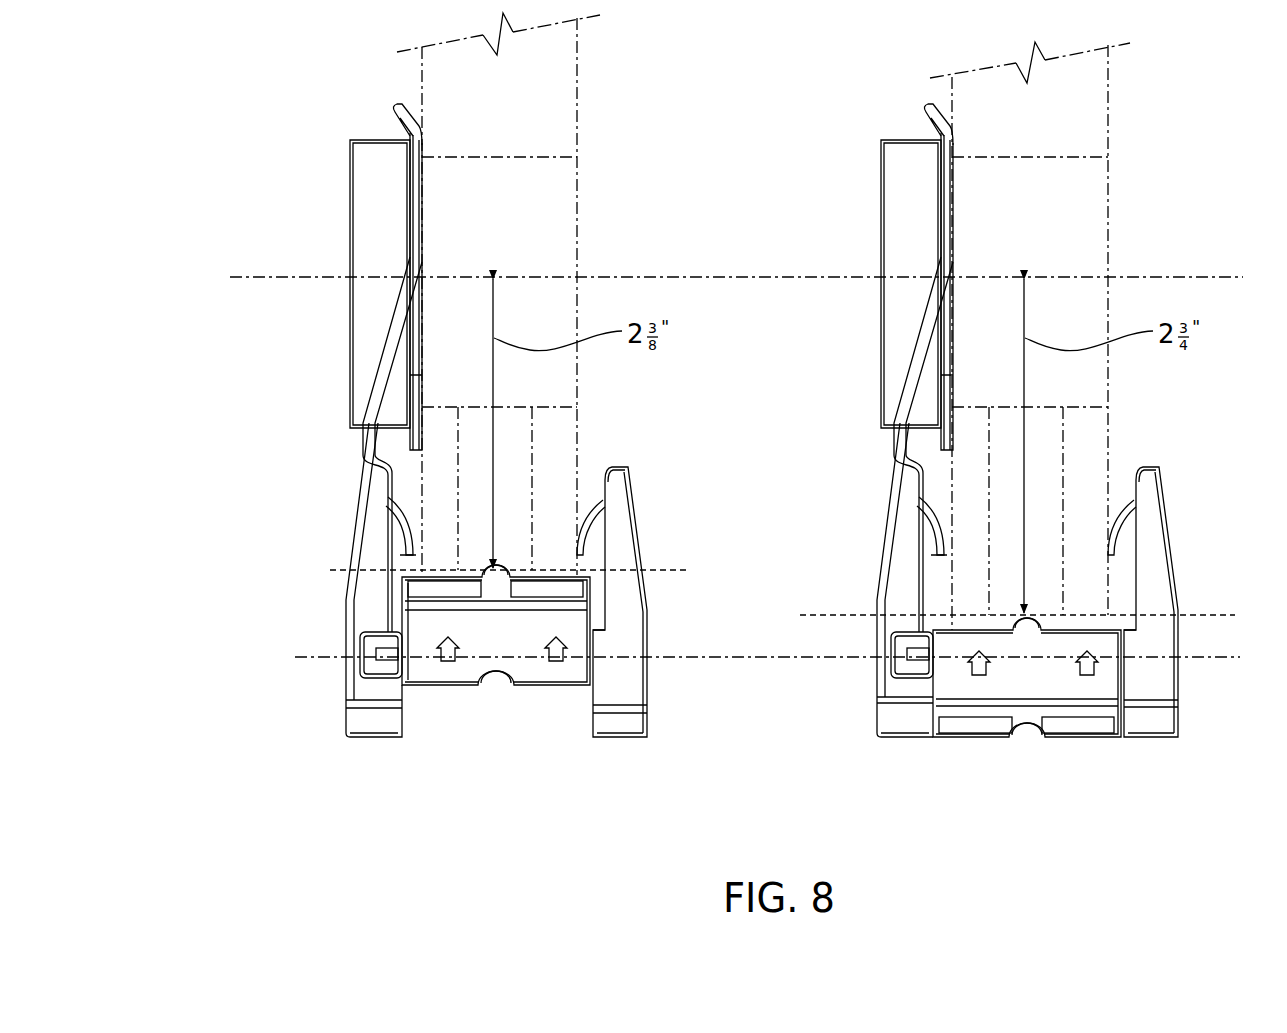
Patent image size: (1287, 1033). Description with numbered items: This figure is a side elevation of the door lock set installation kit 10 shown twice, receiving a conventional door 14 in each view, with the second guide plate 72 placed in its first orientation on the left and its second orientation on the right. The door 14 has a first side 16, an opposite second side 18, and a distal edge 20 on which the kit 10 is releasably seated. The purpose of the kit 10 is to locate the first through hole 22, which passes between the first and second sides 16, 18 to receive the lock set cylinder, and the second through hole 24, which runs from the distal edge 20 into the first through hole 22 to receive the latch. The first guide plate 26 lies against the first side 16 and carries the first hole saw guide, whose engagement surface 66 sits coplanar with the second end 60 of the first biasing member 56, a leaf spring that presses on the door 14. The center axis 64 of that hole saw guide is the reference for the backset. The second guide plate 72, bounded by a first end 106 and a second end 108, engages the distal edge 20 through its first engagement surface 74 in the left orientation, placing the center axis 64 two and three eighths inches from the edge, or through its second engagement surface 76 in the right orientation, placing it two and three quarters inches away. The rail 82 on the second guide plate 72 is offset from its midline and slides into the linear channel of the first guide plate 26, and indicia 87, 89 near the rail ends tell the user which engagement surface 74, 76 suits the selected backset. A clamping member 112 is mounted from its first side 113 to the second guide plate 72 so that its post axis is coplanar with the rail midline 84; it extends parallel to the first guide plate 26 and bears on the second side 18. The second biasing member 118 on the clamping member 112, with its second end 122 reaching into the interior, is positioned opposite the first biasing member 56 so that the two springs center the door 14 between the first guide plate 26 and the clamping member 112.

The door lock set installation kit 10 is at (253, 186).
The door 14 is at (583, 83).
The first side of the door 16 is at (420, 68).
The second side of the door 18 is at (580, 107).
The distal edge of the door 20 is at (430, 580).
The first through hole 22 is at (545, 407).
The second through hole 24 is at (533, 463).
The first guide plate 26 is at (346, 379).
The first biasing member 56 is at (393, 535).
The second end of the first biasing member 60 is at (408, 556).
The center axis of the first hole saw guide 64 is at (641, 277).
The engagement surface of the first hole saw guide 66 is at (428, 332).
The second guide plate 72 is at (445, 690).
The first engagement surface 74 is at (487, 568).
The second engagement surface 76 is at (1017, 613).
The rail 82 is at (373, 677).
The midline of the rail 84 is at (725, 660).
The indicia 87 is at (500, 660).
The indicia 89 is at (977, 682).
The first end of the second guide plate 106 is at (418, 660).
The second end of the second guide plate 108 is at (1018, 688).
The clamping member 112 is at (620, 743).
The first side of the clamping member 113 is at (603, 560).
The second biasing member 118 is at (590, 537).
The second end of the second biasing member 122 is at (582, 547).